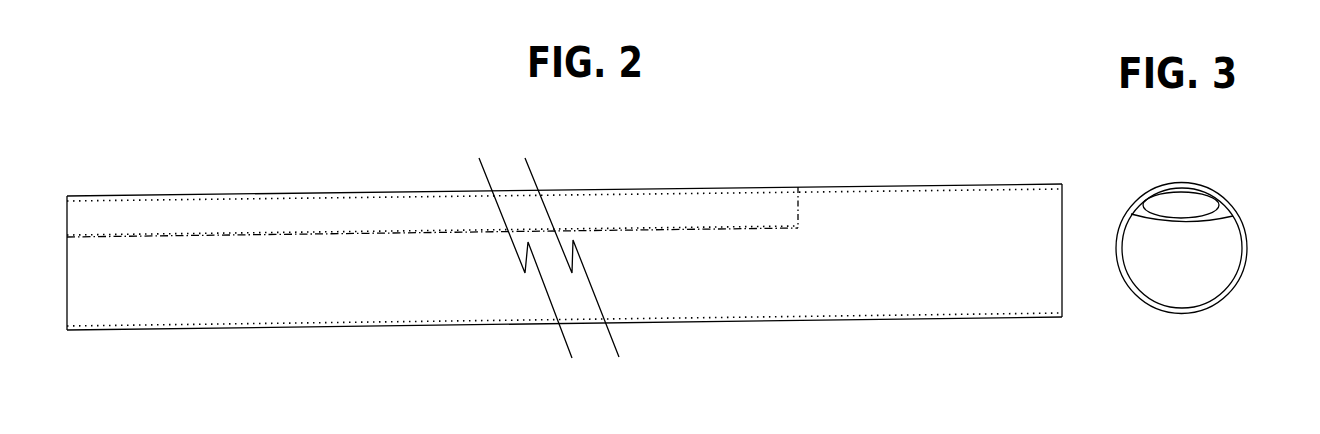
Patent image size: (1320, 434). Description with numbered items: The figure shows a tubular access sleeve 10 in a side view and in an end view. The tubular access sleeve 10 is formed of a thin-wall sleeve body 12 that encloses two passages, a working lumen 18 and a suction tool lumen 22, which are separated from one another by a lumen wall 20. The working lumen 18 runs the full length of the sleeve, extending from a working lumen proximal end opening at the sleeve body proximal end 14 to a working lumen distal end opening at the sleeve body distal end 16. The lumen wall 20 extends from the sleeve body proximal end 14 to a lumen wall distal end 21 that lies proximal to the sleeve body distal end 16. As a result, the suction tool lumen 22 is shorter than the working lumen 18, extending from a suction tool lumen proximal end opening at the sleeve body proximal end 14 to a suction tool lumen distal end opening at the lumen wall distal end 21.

In FIG. 2, the tubular access sleeve 10 is at (348, 112).
In FIG. 3, the tubular access sleeve 10 is at (1193, 392).
In FIG. 2, the sleeve body 12 is at (495, 327).
In FIG. 3, the sleeve body 12 is at (1228, 200).
In FIG. 2, the sleeve body proximal end 14 is at (67, 190).
In FIG. 2, the sleeve body distal end 16 is at (1062, 178).
In FIG. 2, the working lumen 18 is at (297, 286).
In FIG. 3, the working lumen 18 is at (1183, 298).
In FIG. 2, the lumen wall 20 is at (427, 235).
In FIG. 3, the lumen wall 20 is at (1188, 227).
In FIG. 2, the lumen wall distal end 21 is at (800, 187).
In FIG. 2, the suction tool lumen 22 is at (608, 208).
In FIG. 3, the suction tool lumen 22 is at (1188, 207).